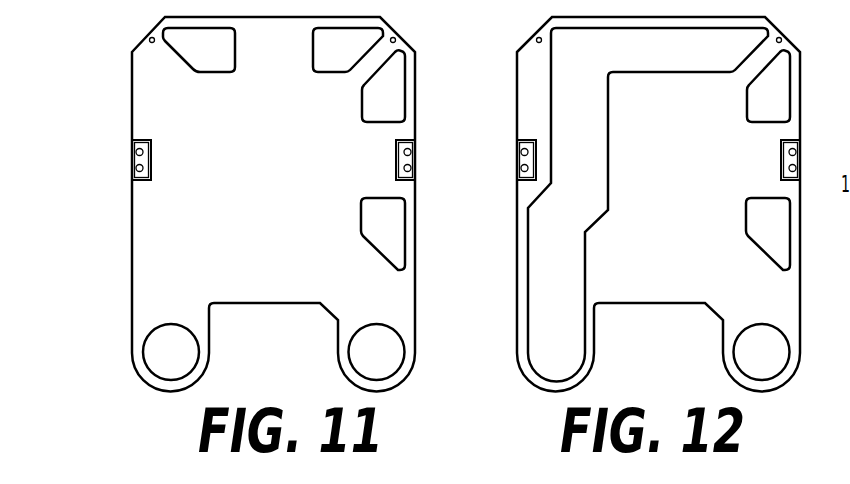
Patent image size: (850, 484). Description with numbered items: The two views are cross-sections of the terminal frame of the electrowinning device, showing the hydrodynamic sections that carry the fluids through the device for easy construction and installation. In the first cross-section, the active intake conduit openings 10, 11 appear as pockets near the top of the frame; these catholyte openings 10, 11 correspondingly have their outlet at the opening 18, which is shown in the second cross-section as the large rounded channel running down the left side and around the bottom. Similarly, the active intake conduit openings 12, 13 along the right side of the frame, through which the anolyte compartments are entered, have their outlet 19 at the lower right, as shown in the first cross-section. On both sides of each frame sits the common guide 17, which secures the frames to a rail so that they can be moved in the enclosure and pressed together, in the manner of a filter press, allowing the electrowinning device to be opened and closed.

In FIG. 11, the opening 10 is at (203, 51).
In FIG. 11, the opening 11 is at (343, 51).
In FIG. 11, the lateral opening 12 is at (380, 88).
In FIG. 12, the lateral opening 12 is at (765, 88).
In FIG. 11, the lateral opening 13 is at (382, 232).
In FIG. 12, the lateral opening 13 is at (767, 232).
In FIG. 11, the common guide 17 is at (132, 160).
In FIG. 12, the common guide 17 is at (518, 155).
In FIG. 11, the outlet 18 is at (153, 350).
In FIG. 11, the outlet 19 is at (358, 350).
In FIG. 12, the outlet 19 is at (743, 350).